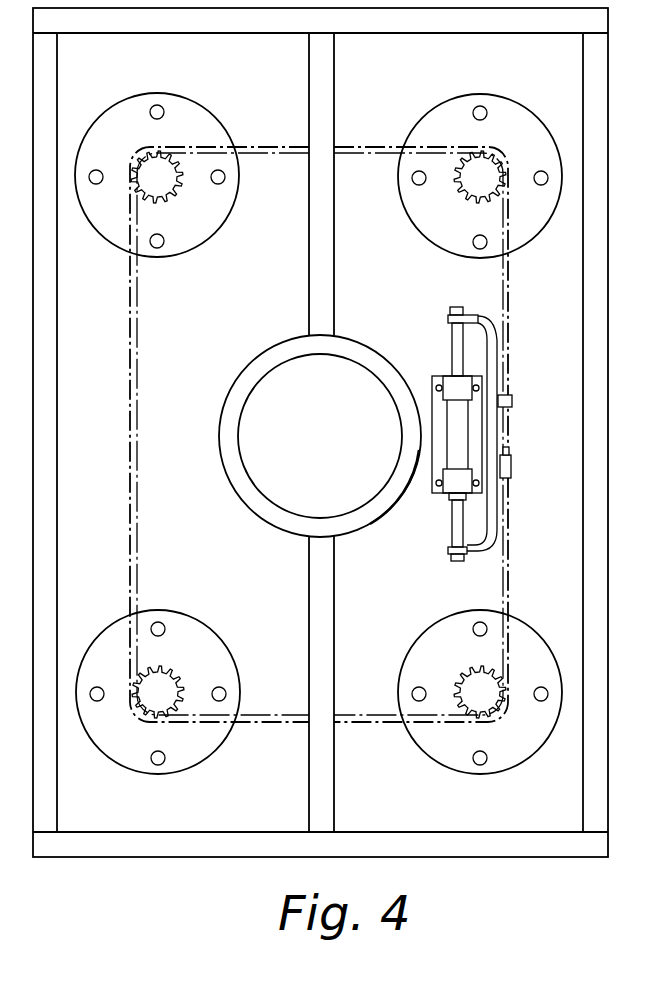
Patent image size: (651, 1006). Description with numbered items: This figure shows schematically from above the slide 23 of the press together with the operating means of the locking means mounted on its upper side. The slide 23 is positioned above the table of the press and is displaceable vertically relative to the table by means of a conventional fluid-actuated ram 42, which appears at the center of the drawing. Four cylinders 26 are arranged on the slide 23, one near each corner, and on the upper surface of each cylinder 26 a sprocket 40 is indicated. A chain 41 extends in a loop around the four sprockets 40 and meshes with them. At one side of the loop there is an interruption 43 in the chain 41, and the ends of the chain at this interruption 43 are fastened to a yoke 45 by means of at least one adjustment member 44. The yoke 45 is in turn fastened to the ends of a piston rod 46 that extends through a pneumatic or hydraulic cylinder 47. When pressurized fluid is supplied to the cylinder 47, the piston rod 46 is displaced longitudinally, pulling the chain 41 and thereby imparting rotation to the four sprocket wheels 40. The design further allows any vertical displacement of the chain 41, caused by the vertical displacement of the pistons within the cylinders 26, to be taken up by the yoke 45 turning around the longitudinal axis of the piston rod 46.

The slide 23 is at (392, 278).
The cylinders 26 is at (213, 129).
The sprockets 40 is at (170, 182).
The chain 41 is at (135, 544).
The fluid-actuated ram 42 is at (272, 390).
The interruption 43 is at (505, 428).
The adjustment member 44 is at (510, 460).
The yoke 45 is at (488, 352).
The piston rod 46 is at (457, 343).
The pneumatic or hydraulic cylinder 47 is at (453, 448).